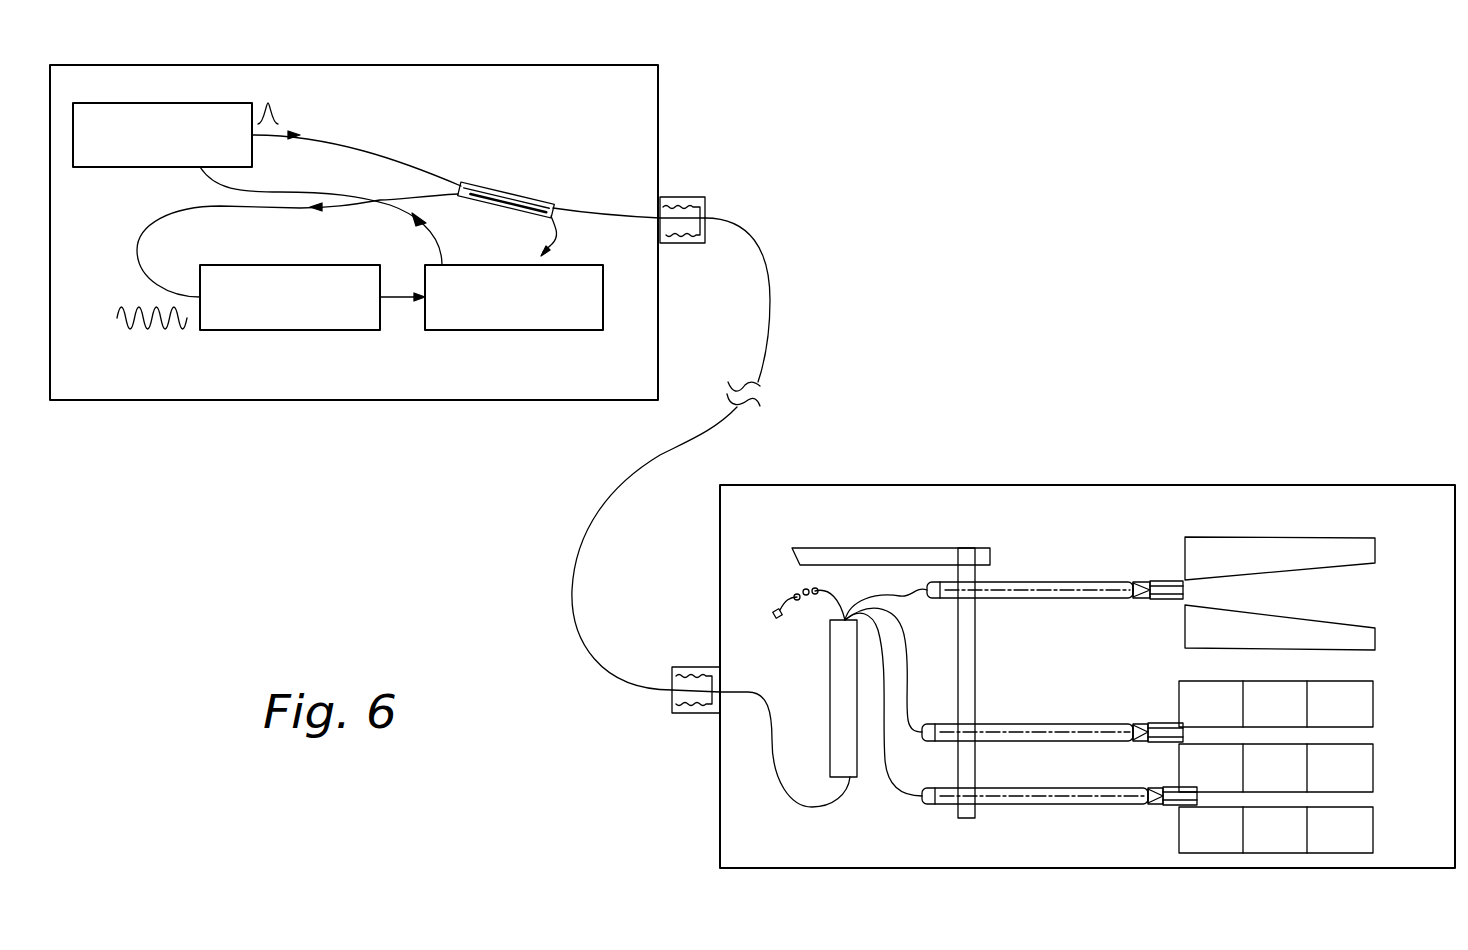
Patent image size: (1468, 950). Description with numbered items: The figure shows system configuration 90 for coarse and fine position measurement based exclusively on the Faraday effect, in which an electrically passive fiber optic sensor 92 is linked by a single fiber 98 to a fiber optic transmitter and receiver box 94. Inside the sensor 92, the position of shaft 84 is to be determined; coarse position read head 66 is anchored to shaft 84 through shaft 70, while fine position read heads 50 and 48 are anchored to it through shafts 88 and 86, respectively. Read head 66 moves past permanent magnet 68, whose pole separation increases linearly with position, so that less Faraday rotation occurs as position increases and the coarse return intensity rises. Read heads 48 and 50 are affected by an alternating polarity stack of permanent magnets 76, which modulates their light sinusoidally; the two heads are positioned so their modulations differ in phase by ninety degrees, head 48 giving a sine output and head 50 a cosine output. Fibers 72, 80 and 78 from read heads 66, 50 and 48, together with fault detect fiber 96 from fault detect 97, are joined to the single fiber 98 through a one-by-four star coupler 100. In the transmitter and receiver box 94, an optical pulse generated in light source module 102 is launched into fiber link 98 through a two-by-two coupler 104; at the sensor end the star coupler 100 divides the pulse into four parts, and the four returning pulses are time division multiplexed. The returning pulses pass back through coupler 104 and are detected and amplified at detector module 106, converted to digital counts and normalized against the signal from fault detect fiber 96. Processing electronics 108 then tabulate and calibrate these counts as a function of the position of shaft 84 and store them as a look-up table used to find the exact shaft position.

The read head 48 is at (1163, 789).
The read head 50 is at (1150, 727).
The read head 66 is at (1148, 582).
The permanent magnet 68 is at (1185, 540).
The shaft 70 is at (1080, 582).
The fiber 72 is at (910, 590).
The alternating polarity stack of permanent magnets 76 is at (1375, 700).
The fiber 78 is at (912, 800).
The fiber 80 is at (910, 735).
The shaft 84 is at (885, 548).
The shaft 86 is at (1002, 788).
The shaft 88 is at (1045, 725).
The system configuration 90 is at (1075, 240).
The electrically passive fiber optic sensor 92 is at (893, 485).
The fiber optic transmitter and receiver box 94 is at (455, 65).
The fault detect fiber 96 is at (797, 594).
The fault detect 97 is at (776, 611).
The fiber 98 is at (598, 217).
The 1x4 star coupler 100 is at (828, 752).
The light source module 102 is at (150, 103).
The 2x2 coupler 104 is at (480, 190).
The detector module 106 is at (320, 330).
The processing electronics 108 is at (540, 330).